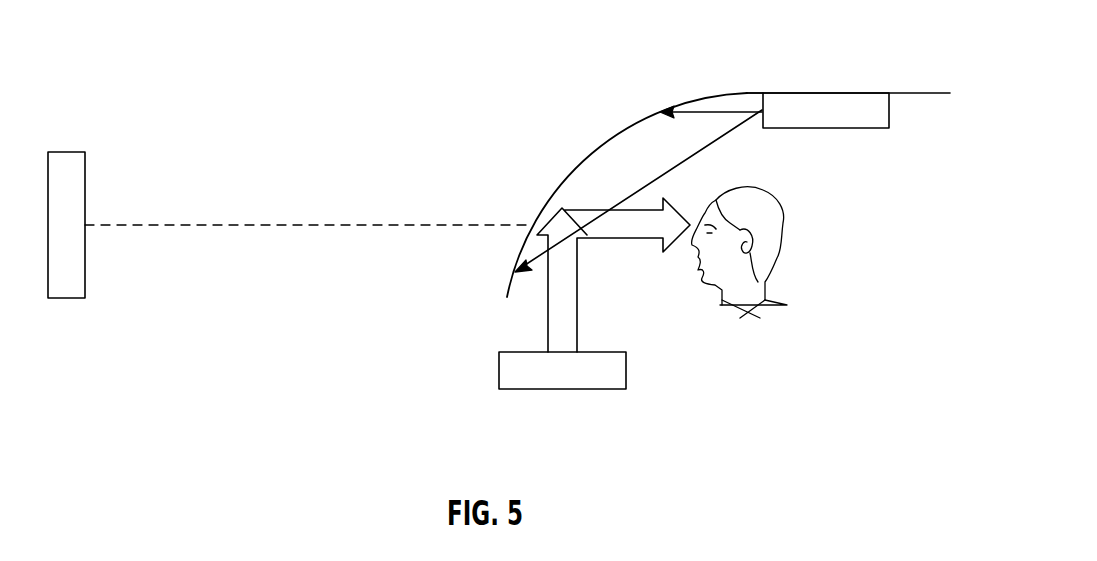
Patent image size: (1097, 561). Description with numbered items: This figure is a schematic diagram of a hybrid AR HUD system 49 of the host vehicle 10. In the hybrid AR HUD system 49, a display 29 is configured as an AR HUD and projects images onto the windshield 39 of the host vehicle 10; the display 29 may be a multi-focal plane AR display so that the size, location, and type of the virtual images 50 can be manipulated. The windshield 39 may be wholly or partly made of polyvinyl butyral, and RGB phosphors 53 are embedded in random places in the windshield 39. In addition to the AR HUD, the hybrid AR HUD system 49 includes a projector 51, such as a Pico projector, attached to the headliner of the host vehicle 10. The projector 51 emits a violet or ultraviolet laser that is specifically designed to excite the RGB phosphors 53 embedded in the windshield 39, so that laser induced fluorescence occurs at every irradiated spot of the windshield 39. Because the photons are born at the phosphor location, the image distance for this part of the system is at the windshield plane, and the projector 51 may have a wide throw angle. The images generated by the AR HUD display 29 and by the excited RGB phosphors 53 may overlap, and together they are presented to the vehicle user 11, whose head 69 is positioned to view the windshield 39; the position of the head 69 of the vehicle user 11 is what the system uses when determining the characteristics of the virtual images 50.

The host vehicle 10 is at (887, 57).
The vehicle user 11 is at (773, 243).
The display 29 is at (562, 389).
The windshield 39 is at (594, 156).
The hybrid AR HUD system 49 is at (658, 33).
The virtual image 50 is at (86, 166).
The projector 51 is at (888, 128).
The RGB phosphors 53 is at (749, 92).
The head 69 is at (771, 196).